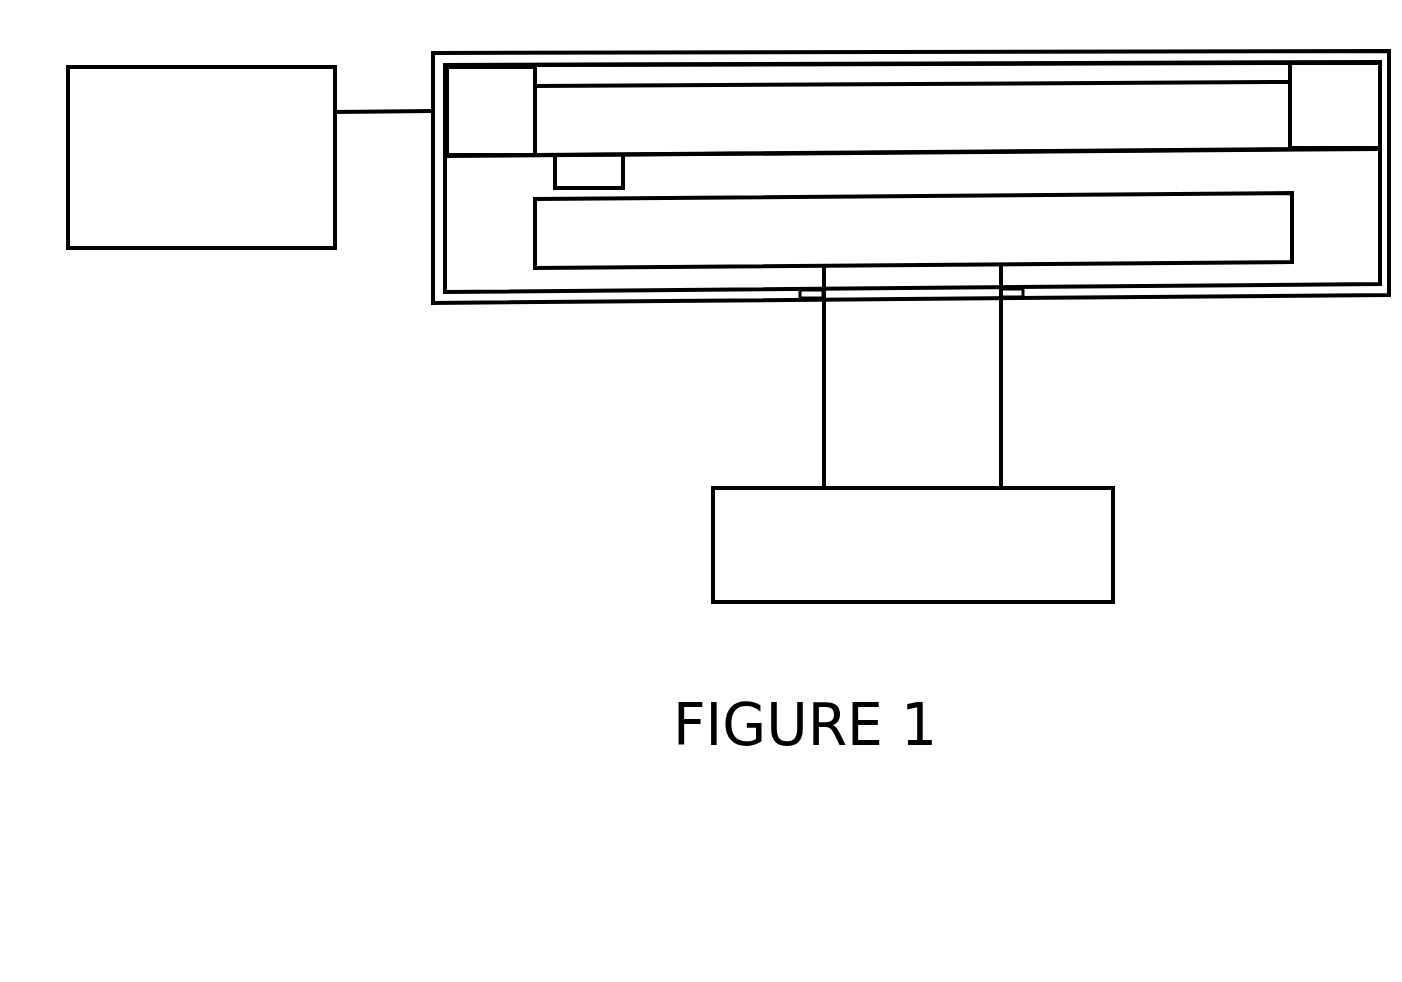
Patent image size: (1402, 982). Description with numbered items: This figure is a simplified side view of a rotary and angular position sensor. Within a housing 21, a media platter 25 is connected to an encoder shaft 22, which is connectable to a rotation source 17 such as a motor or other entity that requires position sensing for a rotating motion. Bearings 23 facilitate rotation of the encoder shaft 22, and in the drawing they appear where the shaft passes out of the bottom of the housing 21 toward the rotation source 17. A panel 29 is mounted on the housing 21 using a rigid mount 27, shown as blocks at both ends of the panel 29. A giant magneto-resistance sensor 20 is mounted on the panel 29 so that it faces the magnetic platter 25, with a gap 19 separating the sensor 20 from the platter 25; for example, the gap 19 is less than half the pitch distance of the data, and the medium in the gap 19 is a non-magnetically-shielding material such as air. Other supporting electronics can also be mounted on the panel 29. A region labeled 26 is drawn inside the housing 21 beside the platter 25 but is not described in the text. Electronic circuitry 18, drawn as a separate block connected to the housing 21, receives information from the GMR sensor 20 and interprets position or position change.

The rotation source 17 is at (1050, 603).
The electronic circuitry 18 is at (274, 249).
The gap 19 is at (501, 162).
The giant magneto-resistance (GMR) sensor 20 is at (625, 175).
The housing 21 is at (1381, 298).
The encoder shaft 22 is at (1002, 422).
The bearings 23 is at (812, 303).
The media platter 25 is at (1090, 243).
The chamber 26 is at (1326, 225).
The rigid mount 27 is at (505, 120).
The panel 29 is at (992, 138).